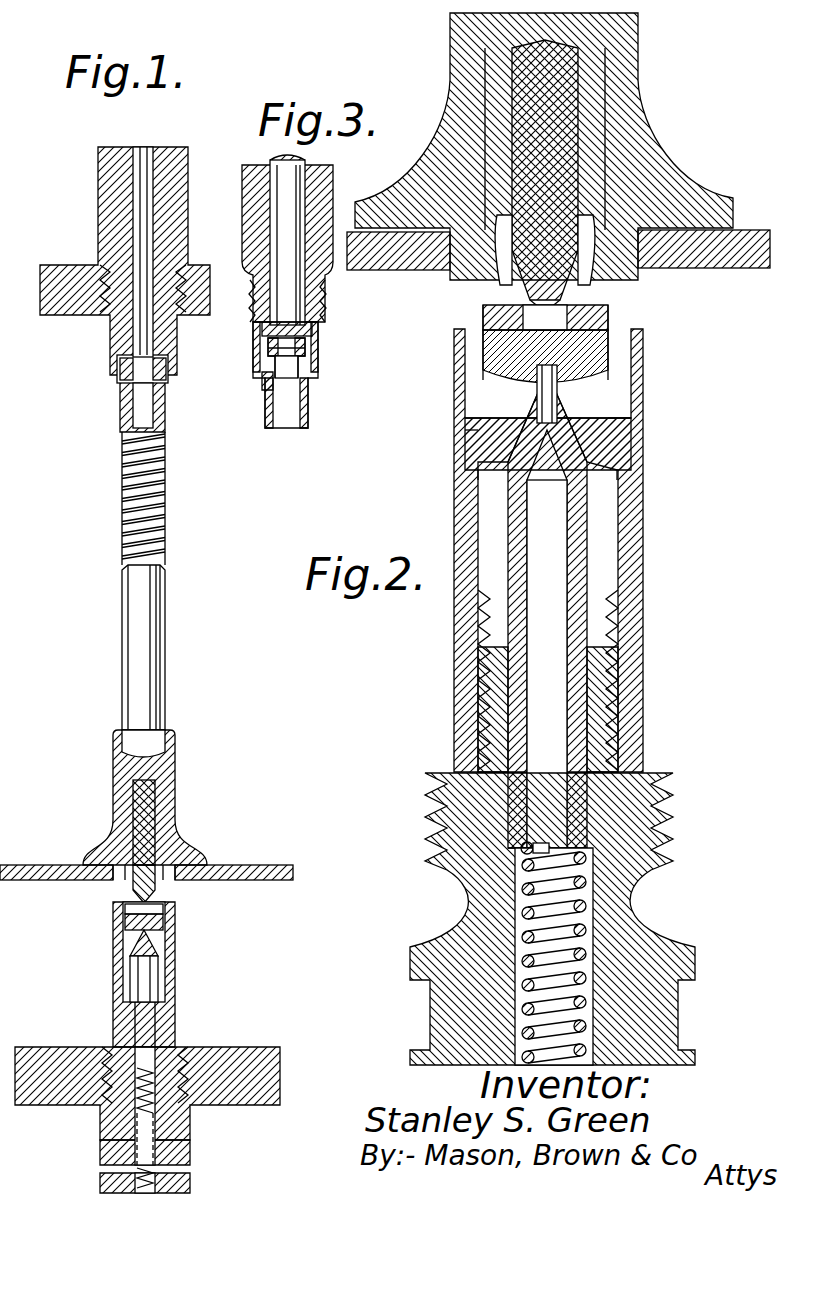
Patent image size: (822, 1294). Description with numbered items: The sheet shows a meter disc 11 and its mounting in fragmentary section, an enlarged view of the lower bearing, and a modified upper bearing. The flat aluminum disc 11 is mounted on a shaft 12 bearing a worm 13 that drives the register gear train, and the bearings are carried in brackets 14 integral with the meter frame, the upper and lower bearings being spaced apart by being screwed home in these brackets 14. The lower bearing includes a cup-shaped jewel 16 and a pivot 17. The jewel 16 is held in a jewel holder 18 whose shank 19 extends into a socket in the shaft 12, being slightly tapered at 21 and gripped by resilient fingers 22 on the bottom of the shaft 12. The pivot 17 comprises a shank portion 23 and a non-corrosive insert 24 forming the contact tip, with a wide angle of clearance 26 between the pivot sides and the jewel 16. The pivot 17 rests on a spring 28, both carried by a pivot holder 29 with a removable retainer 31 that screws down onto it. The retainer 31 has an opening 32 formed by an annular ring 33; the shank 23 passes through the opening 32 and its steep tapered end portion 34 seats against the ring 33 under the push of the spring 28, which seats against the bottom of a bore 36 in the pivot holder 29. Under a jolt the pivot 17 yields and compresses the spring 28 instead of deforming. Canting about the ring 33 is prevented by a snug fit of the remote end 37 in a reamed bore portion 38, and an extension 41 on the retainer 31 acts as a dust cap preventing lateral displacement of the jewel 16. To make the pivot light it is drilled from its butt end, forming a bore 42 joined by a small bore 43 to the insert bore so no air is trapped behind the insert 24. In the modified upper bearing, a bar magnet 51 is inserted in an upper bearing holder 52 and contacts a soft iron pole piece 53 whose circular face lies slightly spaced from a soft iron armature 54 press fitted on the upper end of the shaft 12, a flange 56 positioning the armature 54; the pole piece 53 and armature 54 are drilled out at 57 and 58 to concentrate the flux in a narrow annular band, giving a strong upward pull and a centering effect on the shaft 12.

In FIG. 1, the meter disc 11 is at (258, 882).
In FIG. 2, the meter disc 11 is at (558, 250).
In FIG. 1, the shaft 12 is at (155, 662).
In FIG. 1, the worm 13 is at (162, 498).
In FIG. 1, the brackets 14 is at (62, 268).
In FIG. 1, the cup-shaped jewel 16 is at (168, 918).
In FIG. 2, the cup-shaped jewel 16 is at (510, 350).
In FIG. 1, the pivot 17 is at (148, 978).
In FIG. 2, the pivot 17 is at (608, 537).
In FIG. 1, the jewel holder 18 is at (170, 905).
In FIG. 2, the jewel holder 18 is at (490, 320).
In FIG. 1, the shank 19 is at (150, 822).
In FIG. 2, the shank 19 is at (548, 118).
In FIG. 1, the taper 21 is at (155, 860).
In FIG. 2, the taper 21 is at (582, 243).
In FIG. 1, the resilient fingers 22 is at (125, 888).
In FIG. 2, the resilient fingers 22 is at (500, 270).
In FIG. 2, the shank portion 23 is at (587, 502).
In FIG. 2, the insert 24 is at (548, 392).
In FIG. 2, the angle of clearance 26 is at (598, 332).
In FIG. 2, the spring 28 is at (582, 962).
In FIG. 1, the pivot holder 29 is at (148, 1180).
In FIG. 2, the pivot holder 29 is at (647, 770).
In FIG. 2, the retainer 31 is at (630, 630).
In FIG. 2, the opening 32 is at (578, 458).
In FIG. 2, the annular ring 33 is at (600, 422).
In FIG. 2, the tapered end portion 34 is at (500, 457).
In FIG. 1, the bore 36 is at (152, 1152).
In FIG. 2, the remote end 37 is at (580, 812).
In FIG. 2, the bore portion 38 is at (592, 826).
In FIG. 2, the extension 41 is at (636, 362).
In FIG. 2, the bore 42 is at (560, 572).
In FIG. 2, the small bore 43 is at (482, 432).
In FIG. 3, the bar magnet 51 is at (288, 202).
In FIG. 3, the upper bearing holder 52 is at (248, 246).
In FIG. 3, the soft iron pole piece 53 is at (312, 334).
In FIG. 3, the soft iron armature 54 is at (268, 378).
In FIG. 3, the flange 56 is at (312, 380).
In FIG. 3, the drilled-out portion 57 is at (282, 344).
In FIG. 3, the drilled-out portion 58 is at (292, 366).